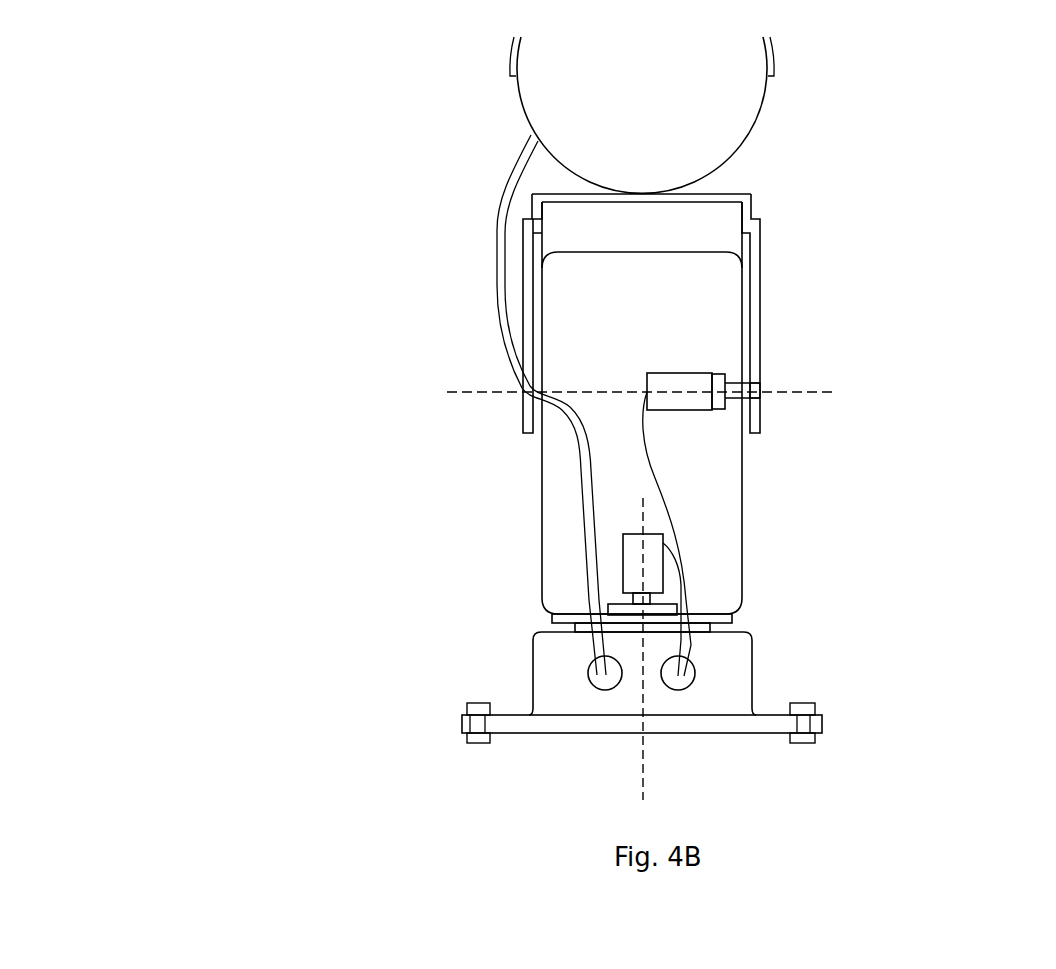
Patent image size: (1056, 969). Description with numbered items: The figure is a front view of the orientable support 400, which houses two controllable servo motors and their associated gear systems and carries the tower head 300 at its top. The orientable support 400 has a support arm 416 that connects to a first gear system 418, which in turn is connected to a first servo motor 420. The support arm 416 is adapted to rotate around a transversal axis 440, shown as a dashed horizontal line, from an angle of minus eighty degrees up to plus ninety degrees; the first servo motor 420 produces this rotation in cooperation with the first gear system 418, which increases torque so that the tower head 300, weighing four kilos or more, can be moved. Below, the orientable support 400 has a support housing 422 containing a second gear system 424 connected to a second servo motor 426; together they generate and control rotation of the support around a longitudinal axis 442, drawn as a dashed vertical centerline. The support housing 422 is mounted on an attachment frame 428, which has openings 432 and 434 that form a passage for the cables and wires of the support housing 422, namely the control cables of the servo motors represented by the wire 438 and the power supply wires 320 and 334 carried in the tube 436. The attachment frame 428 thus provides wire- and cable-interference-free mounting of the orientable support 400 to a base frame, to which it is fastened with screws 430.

The tower head 300 is at (661, 79).
The orientable support 400 is at (407, 399).
The support arm 416 is at (760, 275).
The first gear system 418 is at (720, 412).
The first servo motor 420 is at (677, 412).
The support housing 422 is at (542, 493).
The second gear system 424 is at (667, 604).
The second servo motor 426 is at (635, 534).
The attachment frame 428 is at (752, 662).
The screws 430 is at (815, 738).
The opening 432 is at (593, 682).
The opening 434 is at (683, 688).
The tube 436 is at (523, 387).
The wire 438 is at (645, 442).
The transversal axis 440 is at (790, 391).
The longitudinal axis 442 is at (647, 760).
The power supply wire 334 is at (587, 558).
The power supply wire 320 is at (597, 582).